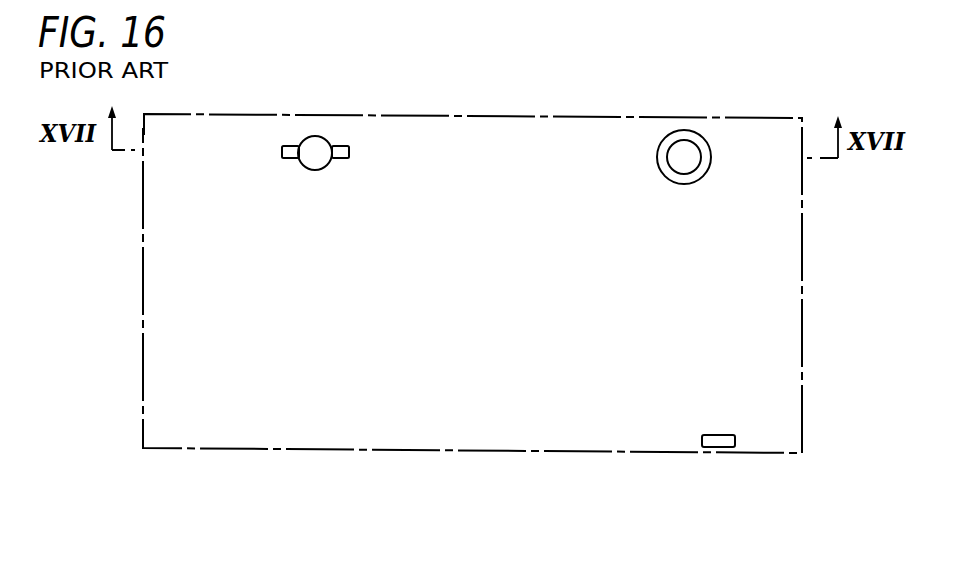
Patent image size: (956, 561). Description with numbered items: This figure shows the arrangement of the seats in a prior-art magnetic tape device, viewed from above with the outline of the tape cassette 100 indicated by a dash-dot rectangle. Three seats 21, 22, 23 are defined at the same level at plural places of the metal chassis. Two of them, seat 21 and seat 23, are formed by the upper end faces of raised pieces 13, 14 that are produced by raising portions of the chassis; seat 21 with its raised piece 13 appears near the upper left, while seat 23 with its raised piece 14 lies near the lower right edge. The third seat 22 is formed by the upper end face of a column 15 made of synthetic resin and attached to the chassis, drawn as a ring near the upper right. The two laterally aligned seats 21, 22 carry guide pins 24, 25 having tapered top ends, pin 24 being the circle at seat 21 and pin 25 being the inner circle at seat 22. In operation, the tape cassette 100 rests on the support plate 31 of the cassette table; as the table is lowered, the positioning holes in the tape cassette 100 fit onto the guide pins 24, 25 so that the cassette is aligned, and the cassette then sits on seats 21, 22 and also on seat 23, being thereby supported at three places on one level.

The tape cassette 100 is at (487, 451).
The support plate 31 is at (545, 6).
The guide pin 24 is at (313, 136).
The seat 21 is at (340, 147).
The raised piece 13 is at (291, 158).
The column 15 is at (710, 140).
The seat 22 is at (682, 133).
The guide pin 25 is at (697, 142).
The raised piece 14 is at (720, 435).
The seat 23 is at (718, 450).